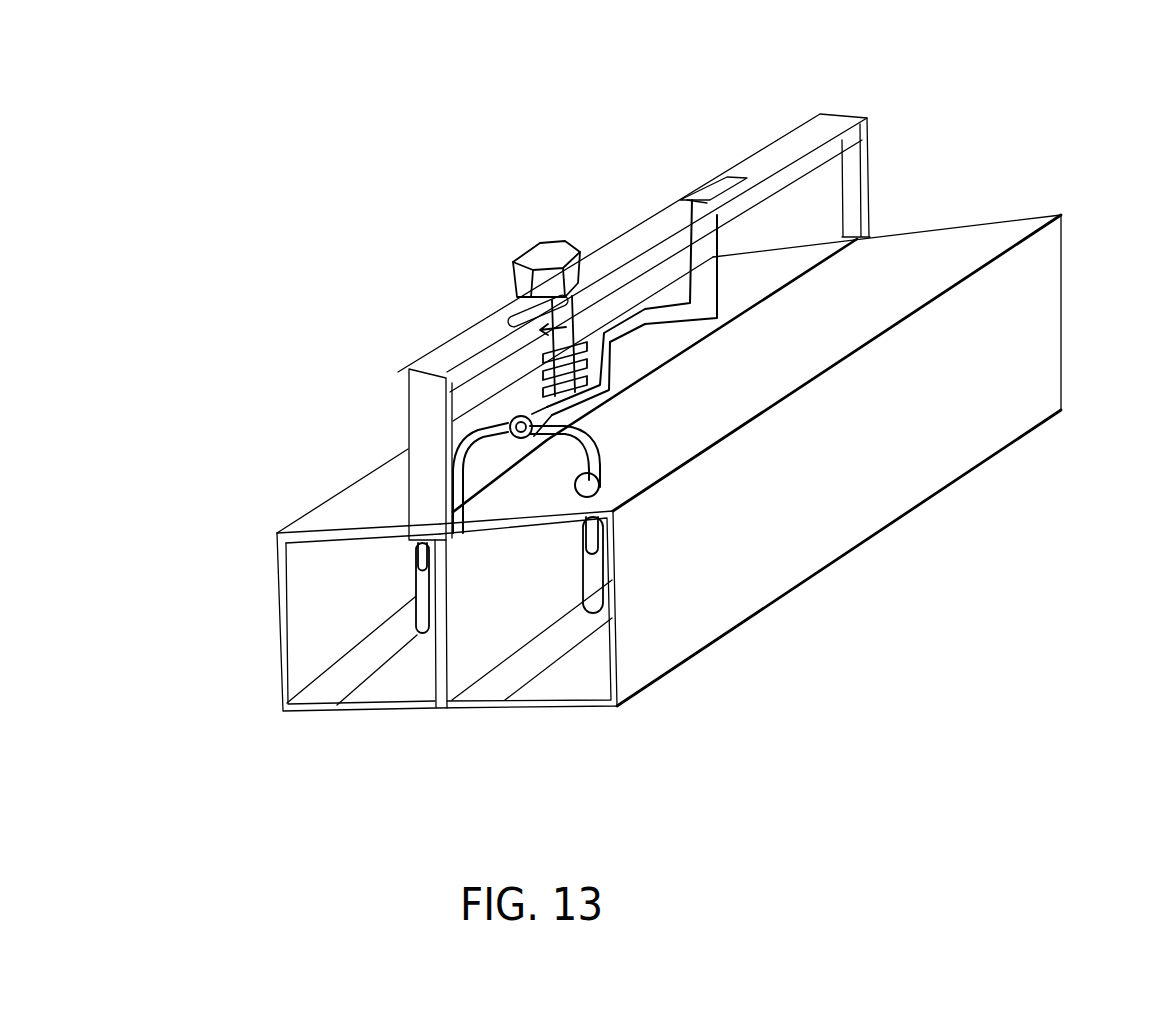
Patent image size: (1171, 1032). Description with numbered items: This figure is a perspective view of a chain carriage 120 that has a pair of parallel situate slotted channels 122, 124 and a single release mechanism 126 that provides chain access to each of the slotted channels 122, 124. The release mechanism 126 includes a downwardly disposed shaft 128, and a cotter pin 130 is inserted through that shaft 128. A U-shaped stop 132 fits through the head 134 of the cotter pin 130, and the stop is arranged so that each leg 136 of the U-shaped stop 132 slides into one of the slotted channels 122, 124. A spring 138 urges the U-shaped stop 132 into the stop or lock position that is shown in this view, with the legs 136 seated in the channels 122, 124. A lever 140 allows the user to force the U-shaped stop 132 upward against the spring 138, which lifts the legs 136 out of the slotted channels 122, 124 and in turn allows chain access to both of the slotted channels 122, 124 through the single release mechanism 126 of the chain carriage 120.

The chain carriage 120 is at (843, 722).
The slotted channel 122 is at (300, 627).
The slotted channel 124 is at (590, 657).
The release mechanism 126 is at (620, 413).
The shaft 128 is at (513, 405).
The cotter pin 130 is at (507, 424).
The U-shaped stop 132 is at (550, 430).
The head 134 is at (512, 412).
The leg 136 is at (418, 633).
The spring 138 is at (592, 332).
The lever 140 is at (667, 320).